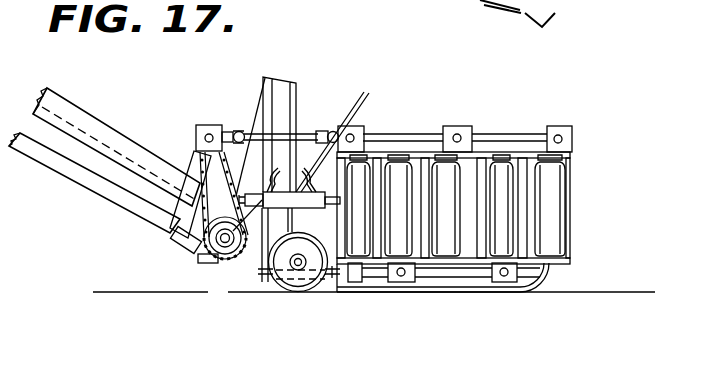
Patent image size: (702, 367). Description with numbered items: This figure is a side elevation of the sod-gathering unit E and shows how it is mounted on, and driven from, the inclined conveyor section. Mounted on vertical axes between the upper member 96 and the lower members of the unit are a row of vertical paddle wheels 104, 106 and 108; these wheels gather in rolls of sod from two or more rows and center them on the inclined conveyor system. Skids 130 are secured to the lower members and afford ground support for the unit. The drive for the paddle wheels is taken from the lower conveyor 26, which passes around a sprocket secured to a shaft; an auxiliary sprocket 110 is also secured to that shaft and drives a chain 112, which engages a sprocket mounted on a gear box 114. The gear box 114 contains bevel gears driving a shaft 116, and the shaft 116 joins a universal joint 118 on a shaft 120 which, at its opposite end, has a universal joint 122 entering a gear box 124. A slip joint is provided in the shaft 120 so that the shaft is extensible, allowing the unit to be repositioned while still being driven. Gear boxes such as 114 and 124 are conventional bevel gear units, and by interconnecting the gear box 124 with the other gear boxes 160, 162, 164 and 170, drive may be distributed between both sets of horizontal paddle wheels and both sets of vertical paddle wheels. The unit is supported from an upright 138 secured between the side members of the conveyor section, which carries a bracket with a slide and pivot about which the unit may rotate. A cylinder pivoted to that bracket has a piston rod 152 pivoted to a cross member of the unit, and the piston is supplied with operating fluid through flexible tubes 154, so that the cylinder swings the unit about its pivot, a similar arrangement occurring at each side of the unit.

The lower conveyor 26 is at (203, 255).
The upper member 96 is at (424, 150).
The vertical paddle wheel 104 is at (396, 172).
The vertical paddle wheel 106 is at (460, 180).
The vertical paddle wheel 108 is at (514, 152).
The auxiliary sprocket 110 is at (182, 245).
The chain 112 is at (201, 157).
The gear box 114 is at (194, 128).
The shaft 116 is at (230, 131).
The universal joint 118 is at (240, 131).
The shaft 120 is at (283, 133).
The universal joint 122 is at (301, 138).
The gear box 124 is at (361, 126).
The skid 130 is at (449, 292).
The upright 138 is at (288, 92).
The piston rod 152 is at (304, 150).
The flexible tube 154 is at (280, 170).
The gear box 160 is at (463, 126).
The gear box 162 is at (561, 132).
The gear box 164 is at (400, 284).
The gear box 170 is at (506, 284).